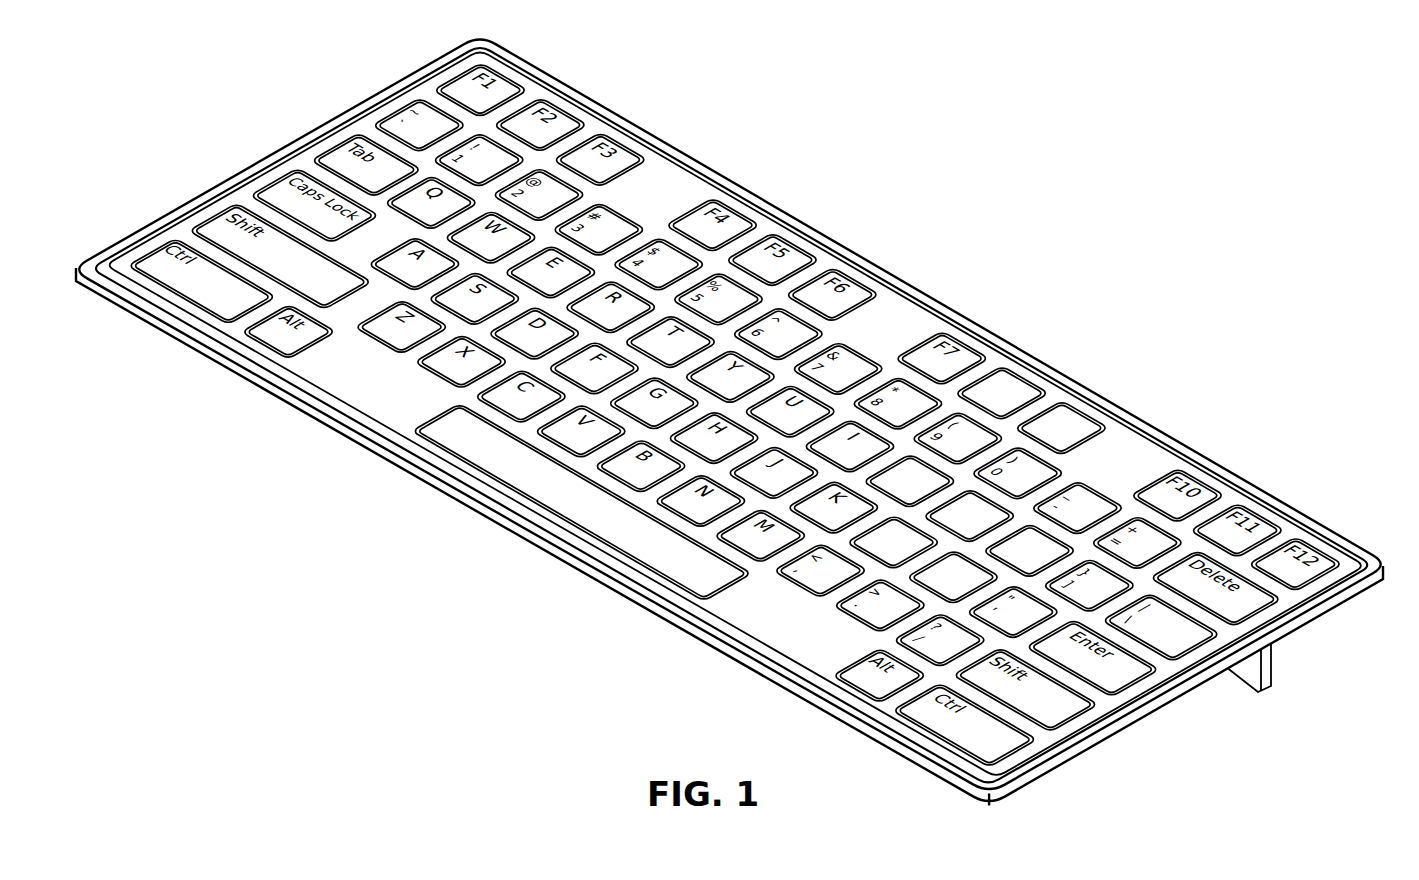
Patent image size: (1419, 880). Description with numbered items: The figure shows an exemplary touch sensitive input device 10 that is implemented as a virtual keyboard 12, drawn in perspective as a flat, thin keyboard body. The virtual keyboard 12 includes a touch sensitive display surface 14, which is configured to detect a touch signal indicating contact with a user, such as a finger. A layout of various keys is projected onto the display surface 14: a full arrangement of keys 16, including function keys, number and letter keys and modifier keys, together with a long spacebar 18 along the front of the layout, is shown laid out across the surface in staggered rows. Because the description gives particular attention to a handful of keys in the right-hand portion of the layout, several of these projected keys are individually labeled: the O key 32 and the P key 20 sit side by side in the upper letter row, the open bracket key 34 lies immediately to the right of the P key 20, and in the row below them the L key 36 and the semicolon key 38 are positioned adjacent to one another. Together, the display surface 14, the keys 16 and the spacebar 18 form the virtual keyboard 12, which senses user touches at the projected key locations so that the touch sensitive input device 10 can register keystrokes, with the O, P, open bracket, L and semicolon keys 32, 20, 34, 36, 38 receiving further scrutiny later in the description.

The touch sensitive input device 10 is at (1178, 127).
The virtual keyboard 12 is at (1240, 485).
The touch sensitive display surface 14 is at (1118, 448).
The keys 16 is at (1092, 412).
The spacebar 18 is at (587, 505).
The P key 20 is at (997, 530).
The O key 32 is at (932, 499).
The open bracket key 34 is at (1053, 566).
The L key 36 is at (911, 560).
The semicolon key 38 is at (972, 595).